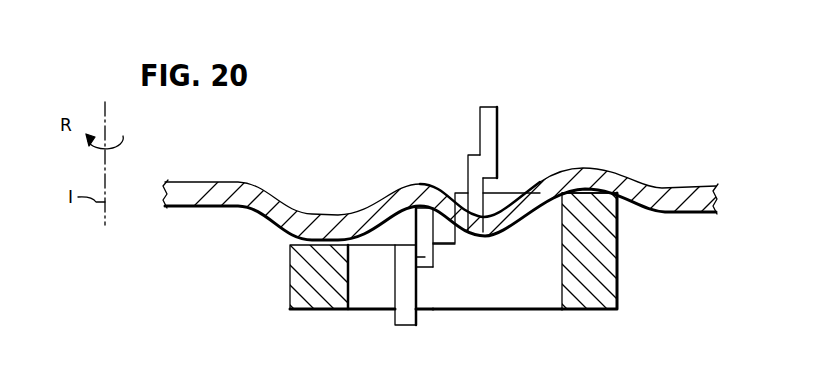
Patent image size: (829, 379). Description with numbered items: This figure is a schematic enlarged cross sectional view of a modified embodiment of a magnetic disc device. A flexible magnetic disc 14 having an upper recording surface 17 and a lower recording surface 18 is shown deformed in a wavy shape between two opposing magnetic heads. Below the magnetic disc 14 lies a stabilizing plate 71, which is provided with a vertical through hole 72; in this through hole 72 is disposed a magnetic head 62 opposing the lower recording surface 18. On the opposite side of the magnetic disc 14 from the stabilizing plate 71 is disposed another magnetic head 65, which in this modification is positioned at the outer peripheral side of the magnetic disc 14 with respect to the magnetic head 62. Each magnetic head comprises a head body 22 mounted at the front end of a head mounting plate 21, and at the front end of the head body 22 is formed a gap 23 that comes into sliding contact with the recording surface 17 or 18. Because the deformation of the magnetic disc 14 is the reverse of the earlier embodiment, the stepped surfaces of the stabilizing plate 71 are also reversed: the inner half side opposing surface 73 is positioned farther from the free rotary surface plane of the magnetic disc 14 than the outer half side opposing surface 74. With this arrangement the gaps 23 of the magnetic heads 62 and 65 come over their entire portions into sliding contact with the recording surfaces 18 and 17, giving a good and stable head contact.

The magnetic disc 14 is at (702, 185).
The recording surface 17 is at (203, 181).
The recording surface 18 is at (663, 214).
The head mounting plate 21 is at (490, 140).
The head body 22 is at (466, 156).
The gap 23 is at (420, 186).
The magnetic head 62 is at (424, 318).
The magnetic head 65 is at (507, 114).
The stabilizing plate 71 is at (626, 296).
The vertical through hole 72 is at (536, 292).
The inner half side opposing surface 73 is at (322, 238).
The outer half side opposing surface 74 is at (590, 192).